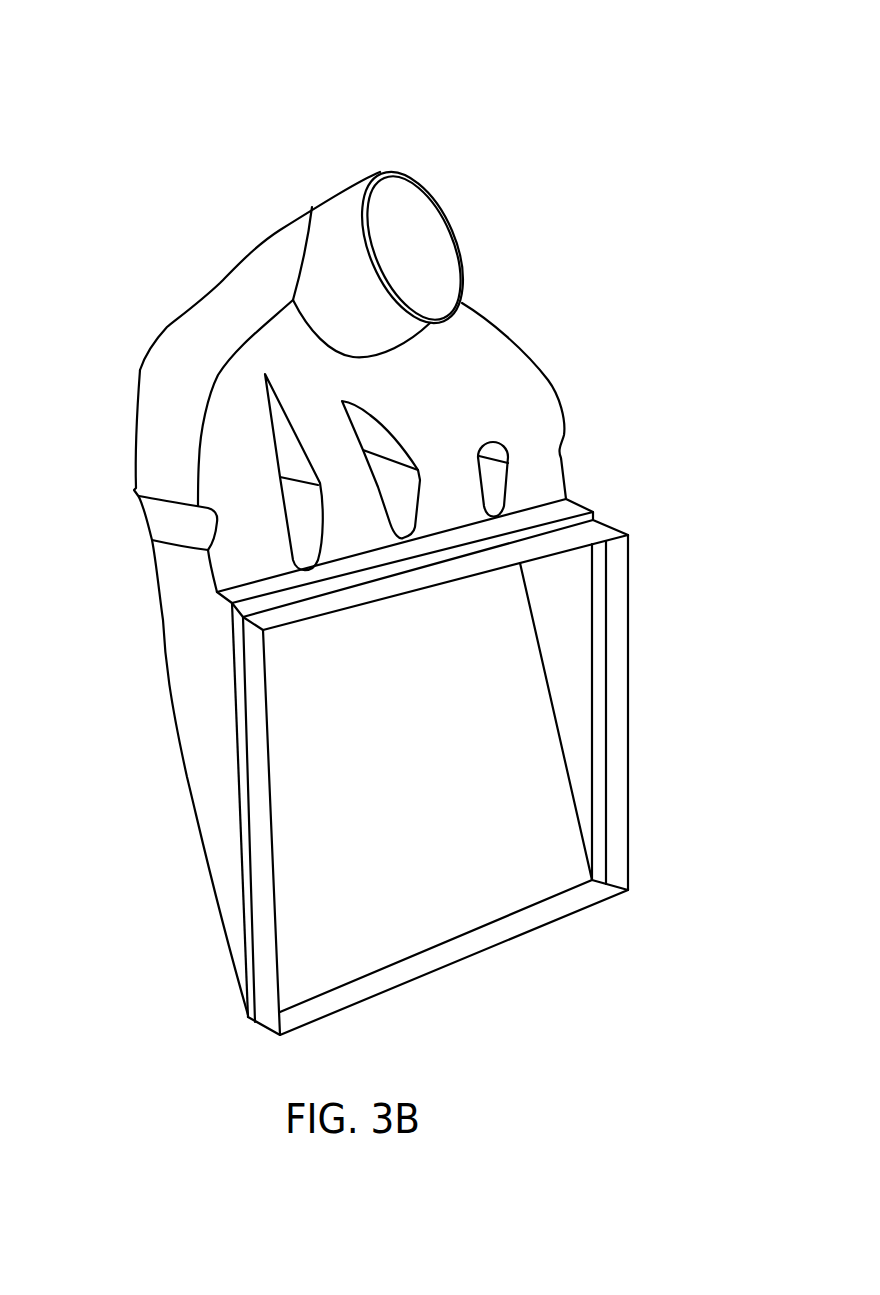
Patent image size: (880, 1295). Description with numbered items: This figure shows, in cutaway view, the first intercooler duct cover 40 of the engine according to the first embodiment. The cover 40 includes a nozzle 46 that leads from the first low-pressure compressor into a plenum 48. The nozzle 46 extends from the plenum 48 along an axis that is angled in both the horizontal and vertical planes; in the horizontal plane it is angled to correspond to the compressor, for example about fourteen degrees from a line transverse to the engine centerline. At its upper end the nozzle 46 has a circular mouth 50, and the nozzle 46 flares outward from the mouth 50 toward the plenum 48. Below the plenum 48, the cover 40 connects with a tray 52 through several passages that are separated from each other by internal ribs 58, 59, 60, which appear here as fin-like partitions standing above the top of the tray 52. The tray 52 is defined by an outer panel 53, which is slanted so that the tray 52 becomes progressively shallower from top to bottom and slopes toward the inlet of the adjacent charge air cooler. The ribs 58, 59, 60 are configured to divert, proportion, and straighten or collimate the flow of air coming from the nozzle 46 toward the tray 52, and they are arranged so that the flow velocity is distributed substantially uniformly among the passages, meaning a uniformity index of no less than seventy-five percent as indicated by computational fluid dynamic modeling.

The first intercooler duct cover 40 is at (359, 131).
The nozzle 46 is at (277, 247).
The plenum 48 is at (175, 442).
The circular mouth 50 is at (413, 202).
The tray 52 is at (615, 617).
The outer panel 53 is at (430, 801).
The internal rib 58 is at (493, 470).
The internal rib 59 is at (400, 480).
The internal rib 60 is at (303, 508).